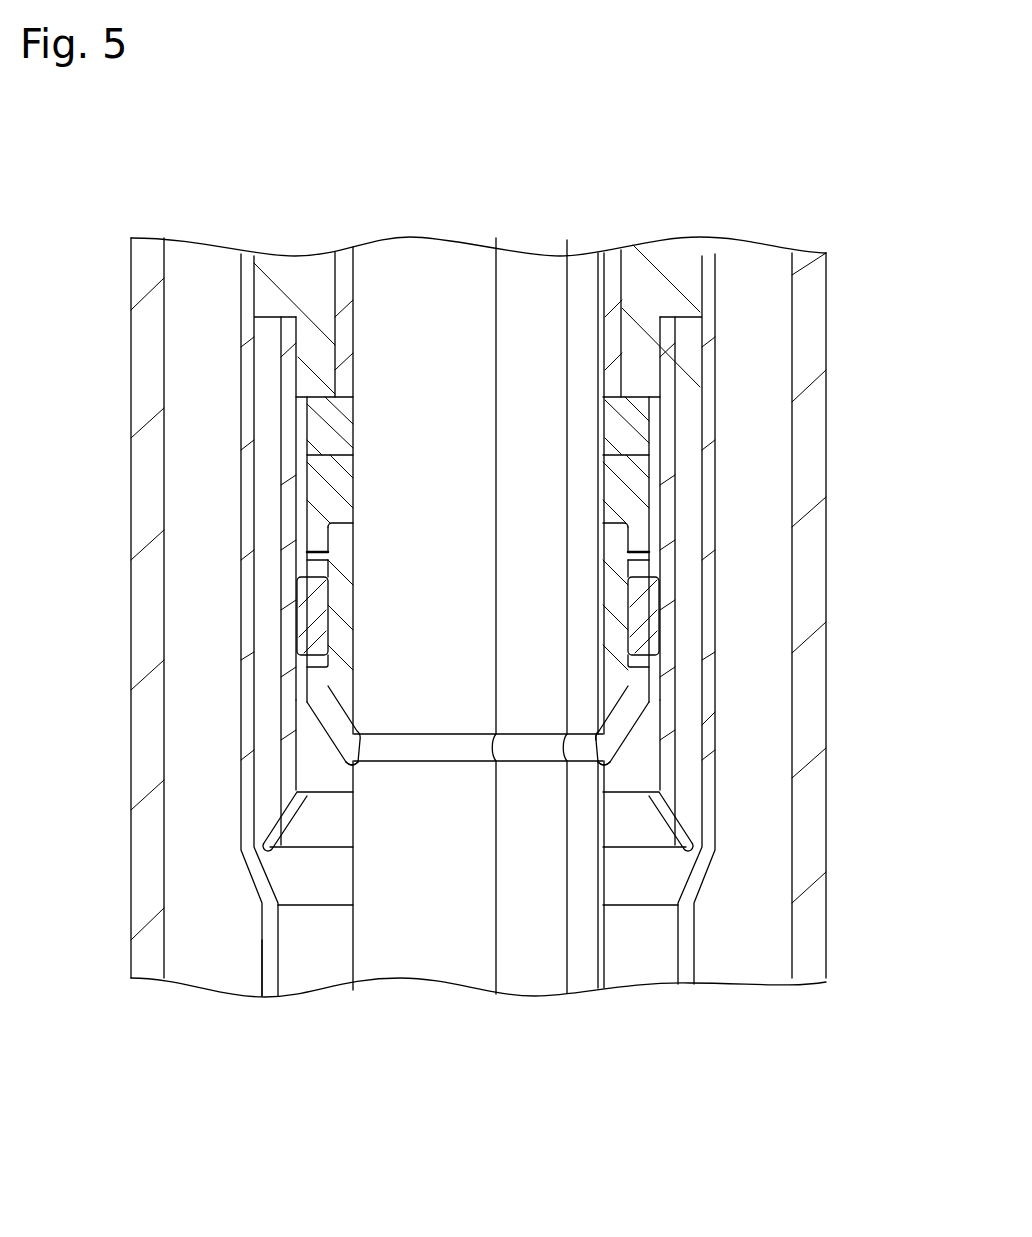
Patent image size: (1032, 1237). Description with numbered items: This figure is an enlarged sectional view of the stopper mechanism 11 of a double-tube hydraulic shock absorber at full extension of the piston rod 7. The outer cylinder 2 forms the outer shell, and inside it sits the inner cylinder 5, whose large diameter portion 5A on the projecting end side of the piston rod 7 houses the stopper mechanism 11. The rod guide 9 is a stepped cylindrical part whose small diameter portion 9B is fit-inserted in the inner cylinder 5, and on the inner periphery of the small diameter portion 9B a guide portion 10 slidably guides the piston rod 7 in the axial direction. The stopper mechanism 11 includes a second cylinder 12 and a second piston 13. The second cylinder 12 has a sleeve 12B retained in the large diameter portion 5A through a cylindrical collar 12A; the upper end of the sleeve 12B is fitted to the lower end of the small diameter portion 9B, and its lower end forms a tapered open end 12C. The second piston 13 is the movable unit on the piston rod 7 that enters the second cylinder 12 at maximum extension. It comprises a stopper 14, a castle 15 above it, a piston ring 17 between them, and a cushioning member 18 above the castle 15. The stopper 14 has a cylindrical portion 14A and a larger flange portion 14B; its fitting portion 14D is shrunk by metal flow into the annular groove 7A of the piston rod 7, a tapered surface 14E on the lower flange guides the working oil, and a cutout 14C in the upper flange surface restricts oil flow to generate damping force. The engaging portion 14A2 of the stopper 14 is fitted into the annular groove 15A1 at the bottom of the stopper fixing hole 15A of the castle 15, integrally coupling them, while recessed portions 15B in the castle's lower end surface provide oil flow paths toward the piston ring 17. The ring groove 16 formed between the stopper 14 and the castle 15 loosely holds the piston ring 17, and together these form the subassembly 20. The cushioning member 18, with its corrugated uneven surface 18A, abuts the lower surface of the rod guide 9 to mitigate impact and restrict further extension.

The outer cylinder 2 is at (805, 953).
The inner cylinder 5 is at (272, 943).
The large diameter portion 5A is at (705, 718).
The piston rod 7 is at (443, 278).
The annular groove 7A is at (300, 790).
The rod guide 9 is at (297, 252).
The small diameter portion 9B is at (655, 287).
The guide portion 10 is at (343, 278).
The stopper mechanism 11 is at (705, 362).
The second cylinder 12 is at (253, 465).
The cylindrical collar 12A is at (287, 338).
The sleeve 12B is at (315, 716).
The open end 12C is at (683, 822).
The second piston 13 is at (338, 748).
The stopper 14 is at (320, 700).
The cylindrical portion 14A is at (617, 602).
The engaging portion 14A2 is at (328, 530).
The flange portion 14B is at (655, 674).
The cutout 14C is at (330, 662).
The fitting portion 14D is at (612, 757).
The tapered surface 14E is at (620, 740).
The castle 15 is at (640, 475).
The stopper fixing hole 15A is at (660, 522).
The annular groove 15A1 is at (640, 529).
The recessed portion 15B is at (327, 562).
The ring groove 16 is at (318, 577).
The piston ring 17 is at (322, 620).
The cushioning member 18 is at (332, 440).
The uneven surface 18A is at (330, 393).
The subassembly 20 is at (665, 642).